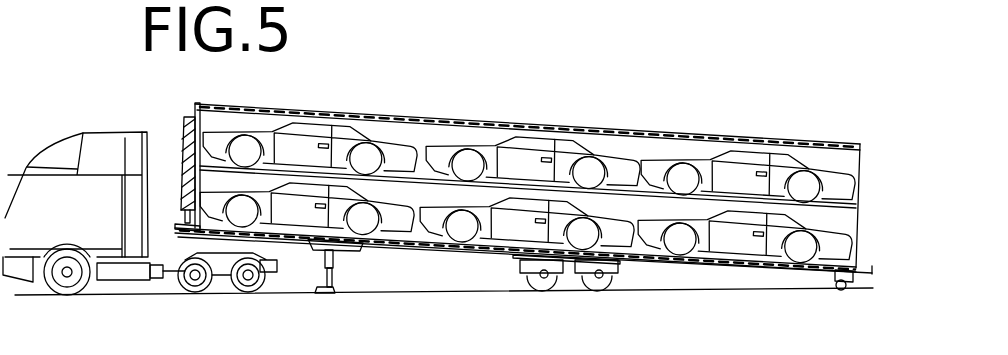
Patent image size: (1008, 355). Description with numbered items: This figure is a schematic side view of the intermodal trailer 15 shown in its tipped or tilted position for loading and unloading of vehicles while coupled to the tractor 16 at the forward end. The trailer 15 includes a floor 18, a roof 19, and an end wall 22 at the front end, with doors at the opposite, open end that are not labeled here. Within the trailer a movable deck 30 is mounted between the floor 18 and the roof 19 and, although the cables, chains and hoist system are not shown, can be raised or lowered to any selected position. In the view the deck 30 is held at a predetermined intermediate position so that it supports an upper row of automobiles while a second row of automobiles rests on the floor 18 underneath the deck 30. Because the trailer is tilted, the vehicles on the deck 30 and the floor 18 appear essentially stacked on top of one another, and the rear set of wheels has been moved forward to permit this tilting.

The intermodal trailer 15 is at (406, 113).
The tractor 16 is at (50, 146).
The floor 18 is at (703, 260).
The roof 19 is at (633, 132).
The end wall 22 is at (180, 153).
The movable deck 30 is at (641, 202).